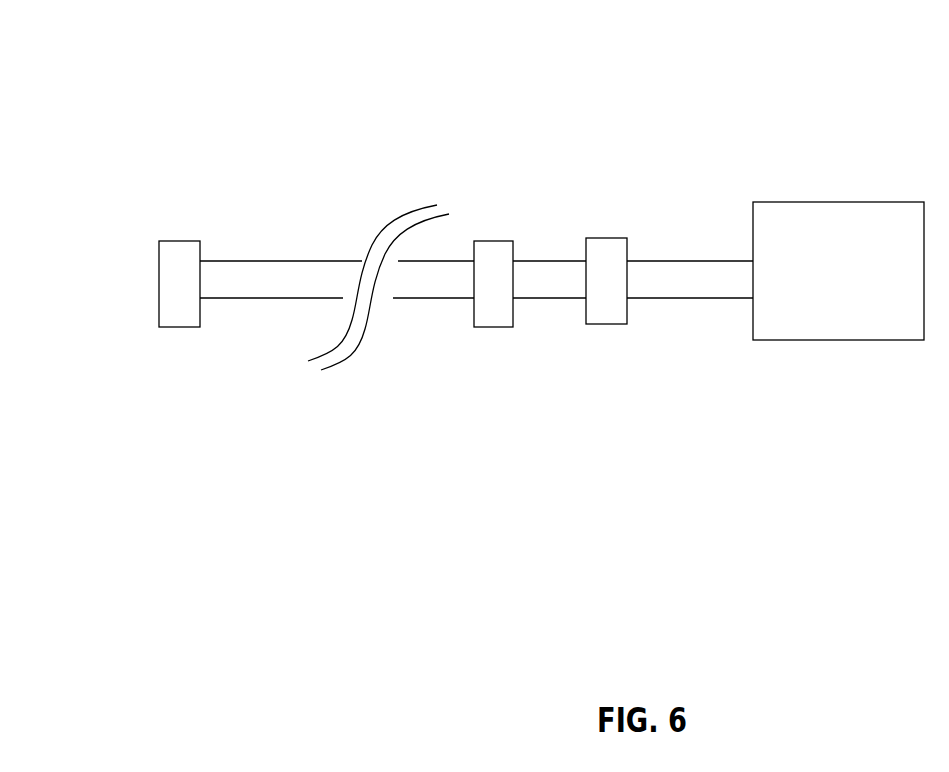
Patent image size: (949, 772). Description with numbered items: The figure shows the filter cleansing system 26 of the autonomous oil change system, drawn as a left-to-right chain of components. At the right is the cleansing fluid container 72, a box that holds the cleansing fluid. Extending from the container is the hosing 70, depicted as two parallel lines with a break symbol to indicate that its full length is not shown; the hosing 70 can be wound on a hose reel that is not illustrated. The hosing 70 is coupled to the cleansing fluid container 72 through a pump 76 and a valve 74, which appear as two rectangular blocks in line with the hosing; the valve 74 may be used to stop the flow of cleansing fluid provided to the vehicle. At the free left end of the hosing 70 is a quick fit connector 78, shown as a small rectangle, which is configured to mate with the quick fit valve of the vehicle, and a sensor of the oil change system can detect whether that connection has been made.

The filter cleansing system 26 is at (158, 70).
The hosing 70 is at (262, 262).
The cleansing fluid container 72 is at (838, 271).
The valve 74 is at (495, 241).
The pump 76 is at (607, 238).
The quick fit connector 78 is at (180, 241).